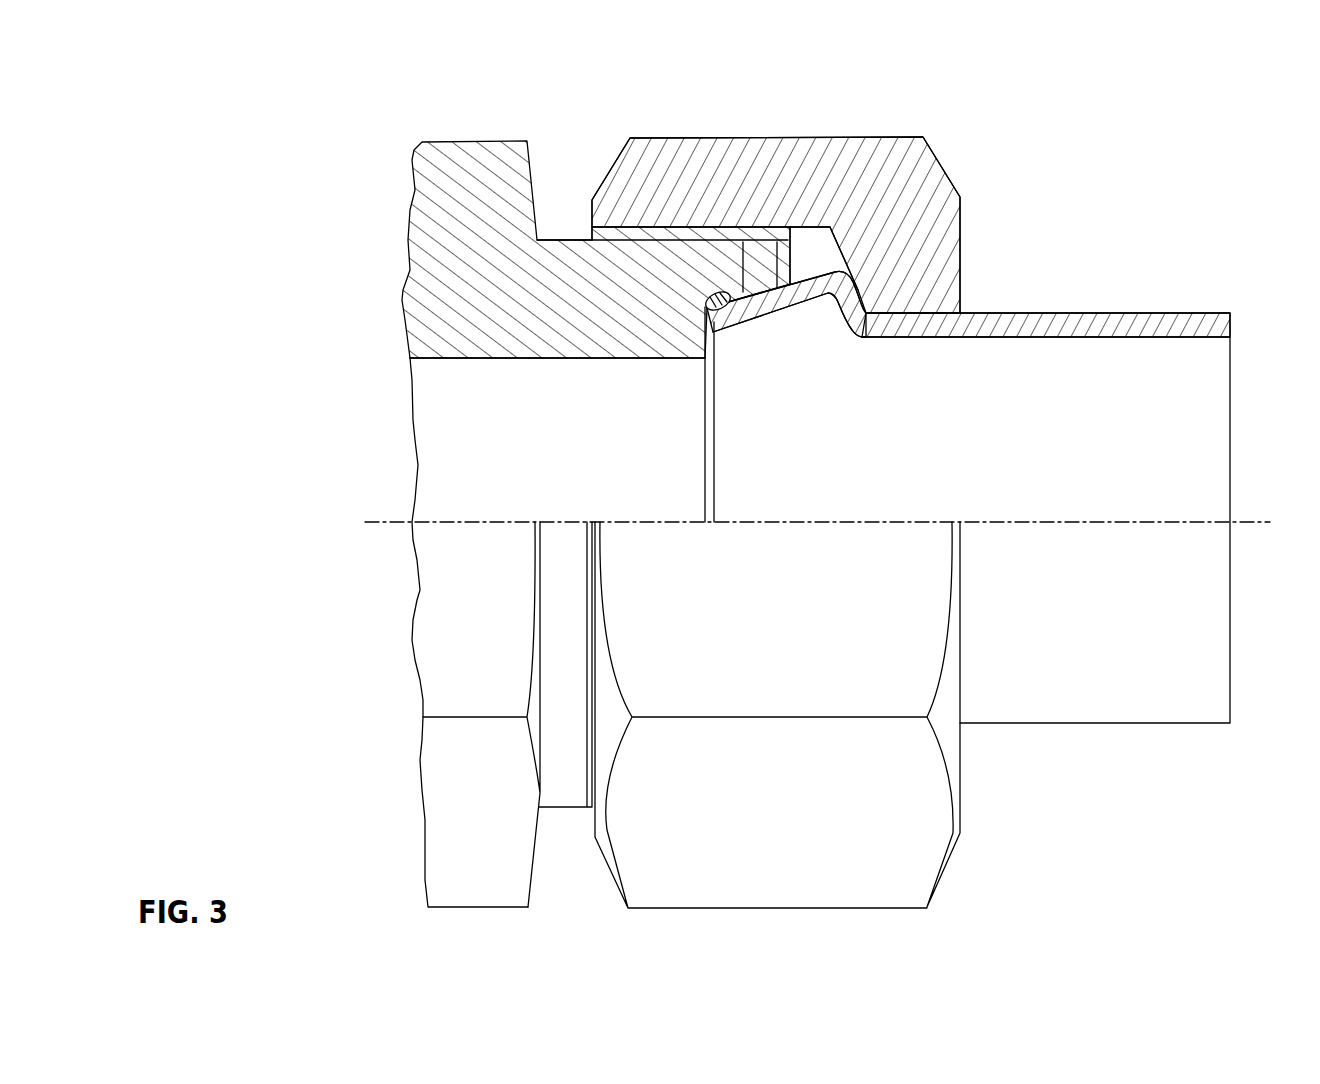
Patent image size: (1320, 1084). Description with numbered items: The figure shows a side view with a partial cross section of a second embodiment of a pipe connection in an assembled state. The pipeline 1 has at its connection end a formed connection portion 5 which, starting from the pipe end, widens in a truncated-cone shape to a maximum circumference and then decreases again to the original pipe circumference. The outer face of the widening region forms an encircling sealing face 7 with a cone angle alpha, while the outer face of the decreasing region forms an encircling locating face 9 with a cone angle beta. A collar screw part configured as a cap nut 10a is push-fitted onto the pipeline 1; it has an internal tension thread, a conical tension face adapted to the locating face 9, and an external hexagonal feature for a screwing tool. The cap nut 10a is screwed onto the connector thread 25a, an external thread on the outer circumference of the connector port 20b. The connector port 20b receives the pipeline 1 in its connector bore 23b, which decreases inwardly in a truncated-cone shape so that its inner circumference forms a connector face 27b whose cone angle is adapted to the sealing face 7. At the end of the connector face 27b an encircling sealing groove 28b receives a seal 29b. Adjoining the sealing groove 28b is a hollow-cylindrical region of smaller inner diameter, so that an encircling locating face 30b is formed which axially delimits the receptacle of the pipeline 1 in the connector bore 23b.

The pipeline 1 is at (1198, 293).
The connection portion 5 is at (783, 318).
The sealing face 7 is at (788, 230).
The locating face 9 is at (863, 300).
The cap nut 10a is at (898, 124).
The connector port 20b is at (348, 164).
The connector bore 23b is at (696, 428).
The connector thread 25a is at (640, 237).
The connector face 27b is at (777, 242).
The sealing groove 28b is at (706, 297).
The seal 29b is at (743, 242).
The locating face 30b is at (703, 338).